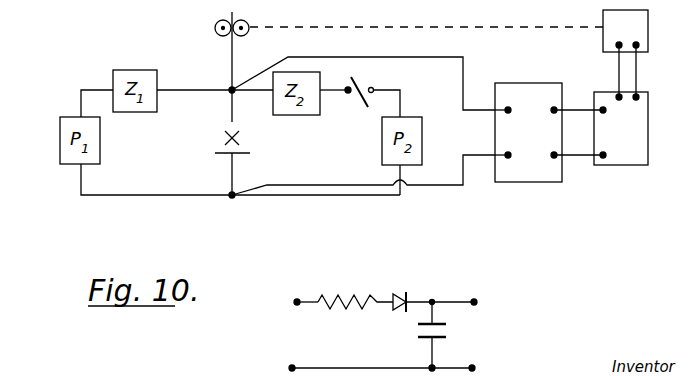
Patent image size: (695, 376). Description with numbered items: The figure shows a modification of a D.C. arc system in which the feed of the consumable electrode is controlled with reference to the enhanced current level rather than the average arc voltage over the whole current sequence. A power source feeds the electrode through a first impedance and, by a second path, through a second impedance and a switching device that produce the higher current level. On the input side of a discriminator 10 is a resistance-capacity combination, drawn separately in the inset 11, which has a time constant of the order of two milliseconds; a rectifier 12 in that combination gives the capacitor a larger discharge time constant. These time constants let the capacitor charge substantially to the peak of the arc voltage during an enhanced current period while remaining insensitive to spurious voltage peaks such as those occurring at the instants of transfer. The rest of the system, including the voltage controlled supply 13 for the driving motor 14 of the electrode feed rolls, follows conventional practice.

The discriminator 10 is at (549, 132).
The inset 11 is at (330, 327).
The rectifier 12 is at (413, 283).
The voltage controlled supply 13 is at (621, 128).
The driving motor 14 is at (625, 53).